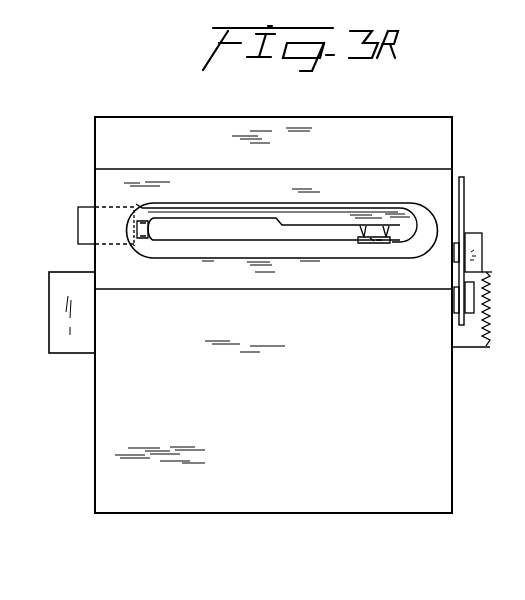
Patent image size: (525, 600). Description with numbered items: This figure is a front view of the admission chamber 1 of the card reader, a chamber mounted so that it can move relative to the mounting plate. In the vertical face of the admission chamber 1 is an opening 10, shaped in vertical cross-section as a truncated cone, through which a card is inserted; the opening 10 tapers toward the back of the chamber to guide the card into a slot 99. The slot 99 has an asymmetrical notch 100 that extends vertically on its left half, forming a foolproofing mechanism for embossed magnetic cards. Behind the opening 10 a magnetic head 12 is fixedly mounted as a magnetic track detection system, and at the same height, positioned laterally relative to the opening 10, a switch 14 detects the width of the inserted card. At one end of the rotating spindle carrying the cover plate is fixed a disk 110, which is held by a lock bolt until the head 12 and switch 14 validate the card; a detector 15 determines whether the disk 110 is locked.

The admission chamber 1 is at (172, 126).
The opening 10 is at (348, 203).
The magnetic head 12 is at (377, 245).
The switch 14 is at (84, 224).
The detector 15 is at (70, 346).
The slot 99 is at (238, 240).
The asymmetrical notch 100 is at (256, 218).
The disk 110 is at (465, 200).